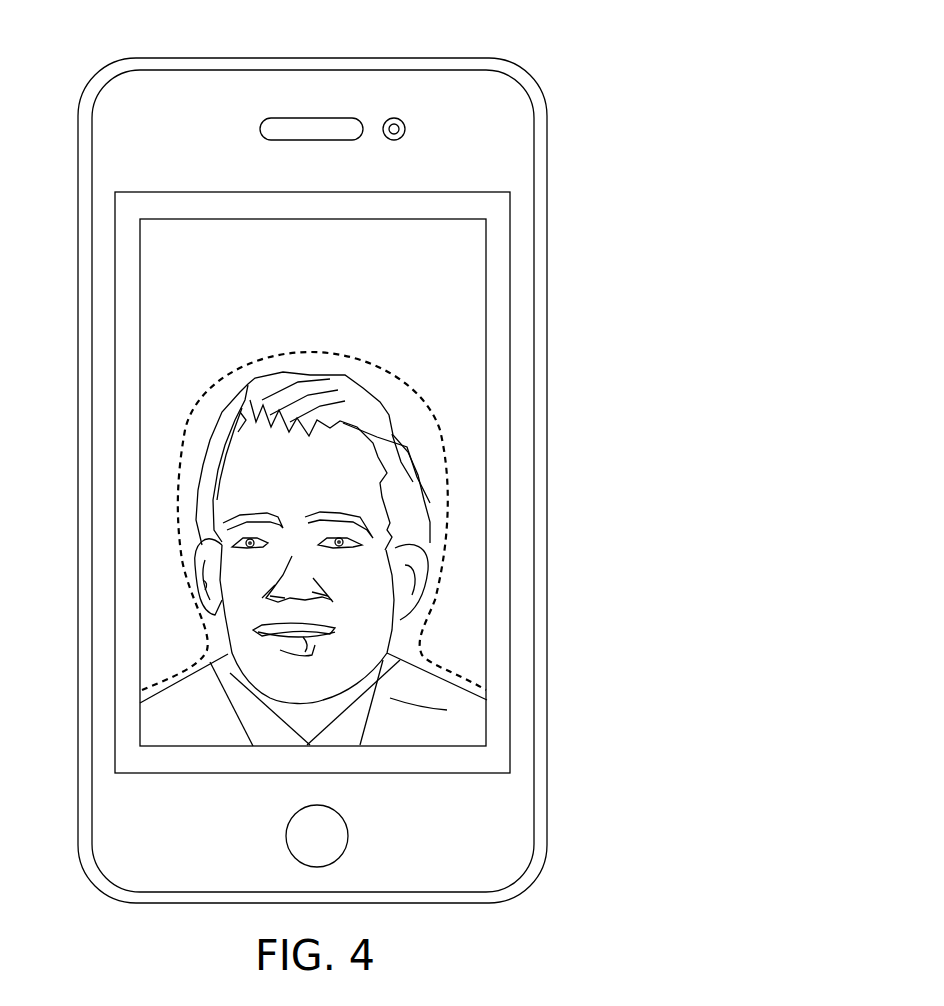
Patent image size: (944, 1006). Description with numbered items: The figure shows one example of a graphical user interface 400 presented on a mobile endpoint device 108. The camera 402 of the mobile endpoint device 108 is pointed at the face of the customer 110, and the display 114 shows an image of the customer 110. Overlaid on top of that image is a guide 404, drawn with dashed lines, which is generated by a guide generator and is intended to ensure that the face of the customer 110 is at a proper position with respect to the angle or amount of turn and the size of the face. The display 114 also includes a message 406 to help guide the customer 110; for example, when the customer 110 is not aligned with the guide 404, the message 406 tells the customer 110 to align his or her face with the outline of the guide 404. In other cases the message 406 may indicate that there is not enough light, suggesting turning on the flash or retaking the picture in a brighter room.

The mobile endpoint device 108 is at (267, 57).
The camera 402 is at (394, 117).
The display 114 is at (480, 241).
The graphical user interface 400 is at (470, 418).
The message 406 is at (157, 260).
The guide 404 is at (360, 355).
The customer 110 is at (247, 388).